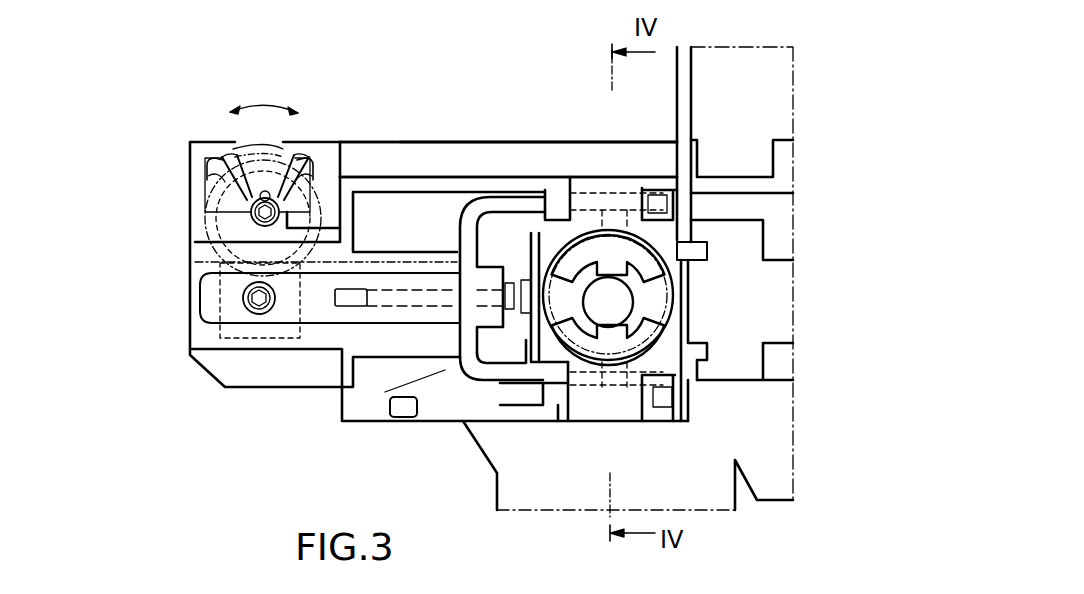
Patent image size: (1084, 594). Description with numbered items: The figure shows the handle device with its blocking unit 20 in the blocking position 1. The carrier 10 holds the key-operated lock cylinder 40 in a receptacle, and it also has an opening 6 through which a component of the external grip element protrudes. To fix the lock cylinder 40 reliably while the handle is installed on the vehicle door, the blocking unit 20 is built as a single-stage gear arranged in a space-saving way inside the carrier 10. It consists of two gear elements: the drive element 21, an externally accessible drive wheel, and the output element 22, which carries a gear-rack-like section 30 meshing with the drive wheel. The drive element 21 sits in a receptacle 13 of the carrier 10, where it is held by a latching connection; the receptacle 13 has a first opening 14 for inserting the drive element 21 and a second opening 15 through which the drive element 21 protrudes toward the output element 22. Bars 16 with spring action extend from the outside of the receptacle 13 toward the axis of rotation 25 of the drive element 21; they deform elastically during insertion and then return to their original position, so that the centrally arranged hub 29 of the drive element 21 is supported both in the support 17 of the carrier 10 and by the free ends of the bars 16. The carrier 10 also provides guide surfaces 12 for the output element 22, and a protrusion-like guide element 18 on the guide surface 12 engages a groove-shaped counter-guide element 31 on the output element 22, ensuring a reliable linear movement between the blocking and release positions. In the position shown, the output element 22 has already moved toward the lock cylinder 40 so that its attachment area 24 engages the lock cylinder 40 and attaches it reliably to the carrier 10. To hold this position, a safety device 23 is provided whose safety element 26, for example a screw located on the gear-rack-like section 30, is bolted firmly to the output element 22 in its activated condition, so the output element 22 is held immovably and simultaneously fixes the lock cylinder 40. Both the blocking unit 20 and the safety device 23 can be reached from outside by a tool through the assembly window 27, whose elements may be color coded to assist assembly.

The blocking position 1 is at (512, 54).
The opening 6 is at (741, 280).
The carrier 10 is at (443, 412).
The guide surfaces 12 is at (192, 340).
The receptacle 13 is at (240, 133).
The first opening 14 is at (257, 140).
The second opening 15 is at (250, 262).
The bars with spring action 16 is at (243, 200).
The support 17 is at (245, 220).
The guide element 18 is at (345, 297).
The blocking unit 20 is at (311, 368).
The drive element 21 is at (290, 228).
The output element 22 is at (320, 333).
The safety device 23 is at (258, 307).
The attachment area 24 is at (378, 416).
The axis of rotation 25 is at (267, 192).
The safety element 26 is at (250, 315).
The assembly window 27 is at (217, 303).
The hub 29 is at (252, 207).
The gear-rack-like section 30 is at (245, 264).
The counter-guide element 31 is at (438, 290).
The lock cylinder 40 is at (602, 355).